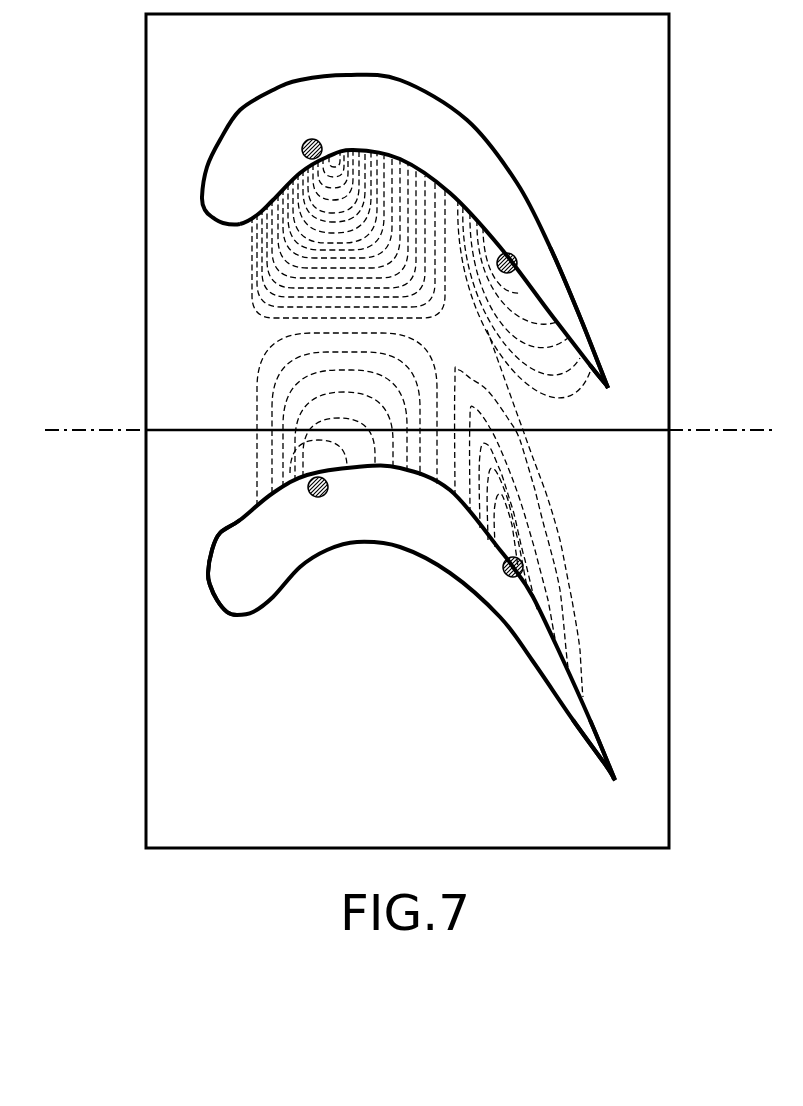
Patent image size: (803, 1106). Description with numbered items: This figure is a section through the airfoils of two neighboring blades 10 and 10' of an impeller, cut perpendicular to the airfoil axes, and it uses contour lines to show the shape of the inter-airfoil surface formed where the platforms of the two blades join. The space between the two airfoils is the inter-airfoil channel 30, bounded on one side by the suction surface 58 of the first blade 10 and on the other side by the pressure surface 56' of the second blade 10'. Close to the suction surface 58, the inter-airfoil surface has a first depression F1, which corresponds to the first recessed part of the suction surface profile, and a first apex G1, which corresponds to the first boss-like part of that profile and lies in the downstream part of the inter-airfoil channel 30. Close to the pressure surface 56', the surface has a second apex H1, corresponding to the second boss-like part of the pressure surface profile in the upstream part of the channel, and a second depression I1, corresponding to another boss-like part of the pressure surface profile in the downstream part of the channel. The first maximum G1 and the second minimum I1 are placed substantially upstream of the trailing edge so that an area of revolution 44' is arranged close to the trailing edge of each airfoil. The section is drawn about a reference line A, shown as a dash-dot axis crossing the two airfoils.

The blade 10' is at (405, 231).
The blade 10 is at (411, 623).
The inter-airfoil channel 30 is at (461, 360).
The area of revolution 44' is at (608, 513).
The pressure surface 56' is at (424, 269).
The suction surface 58 is at (237, 516).
The axis / section line A is at (60, 428).
The second apex H1 is at (314, 136).
The second depression I1 is at (513, 250).
The first depression F1 is at (321, 502).
The first apex G1 is at (500, 569).